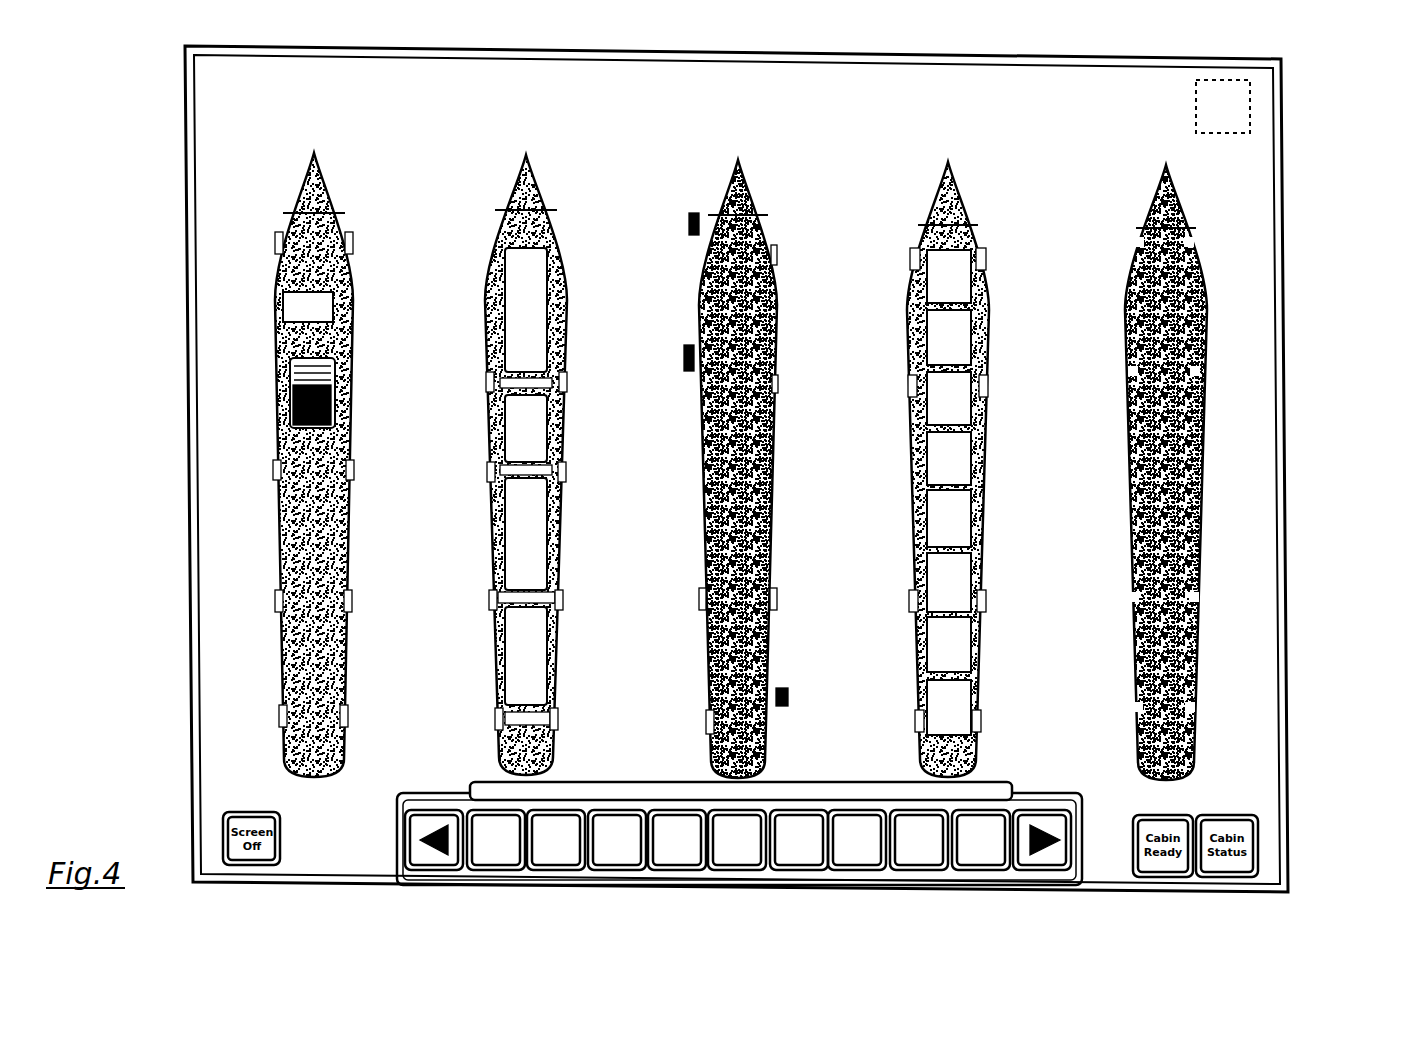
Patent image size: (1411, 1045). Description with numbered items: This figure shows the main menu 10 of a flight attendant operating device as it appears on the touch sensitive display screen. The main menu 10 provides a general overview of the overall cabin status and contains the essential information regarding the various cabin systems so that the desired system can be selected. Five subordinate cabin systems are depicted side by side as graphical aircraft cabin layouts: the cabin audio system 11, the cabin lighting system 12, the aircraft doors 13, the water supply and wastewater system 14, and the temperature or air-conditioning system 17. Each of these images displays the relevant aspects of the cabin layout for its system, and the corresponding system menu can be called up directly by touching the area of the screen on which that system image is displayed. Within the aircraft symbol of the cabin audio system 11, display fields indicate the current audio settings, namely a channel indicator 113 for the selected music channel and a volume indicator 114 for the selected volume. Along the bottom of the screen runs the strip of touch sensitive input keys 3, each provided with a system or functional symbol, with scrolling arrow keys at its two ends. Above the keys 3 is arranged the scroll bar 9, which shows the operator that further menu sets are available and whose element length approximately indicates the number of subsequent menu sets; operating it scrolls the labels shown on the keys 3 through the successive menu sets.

The touch sensitive input keys 3 is at (625, 872).
The scroll bar 9 is at (687, 798).
The main menu 10 is at (1243, 338).
The cabin audio system 11 is at (323, 493).
The cabin lighting system 12 is at (532, 668).
The aircraft doors 13 is at (777, 668).
The water supply and wastewater system 14 is at (1207, 518).
The temperature or air-conditioning system 17 is at (985, 650).
The channel indicator 113 is at (325, 306).
The volume indicator 114 is at (320, 385).